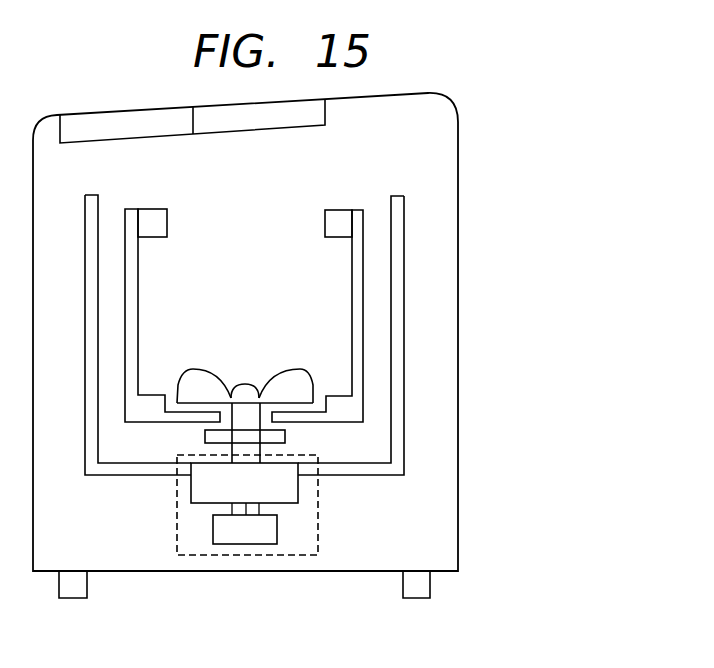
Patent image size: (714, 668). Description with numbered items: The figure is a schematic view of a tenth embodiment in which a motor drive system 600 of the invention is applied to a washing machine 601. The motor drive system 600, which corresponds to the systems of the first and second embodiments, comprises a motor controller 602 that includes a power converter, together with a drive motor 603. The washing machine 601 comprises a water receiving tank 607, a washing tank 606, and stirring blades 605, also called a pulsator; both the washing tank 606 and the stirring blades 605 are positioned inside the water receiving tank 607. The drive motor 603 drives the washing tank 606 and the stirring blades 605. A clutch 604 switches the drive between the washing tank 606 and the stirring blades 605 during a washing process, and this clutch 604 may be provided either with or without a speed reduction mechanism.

The motor drive system 600 is at (177, 529).
The washing machine 601 is at (459, 172).
The motor controller 602 is at (248, 544).
The drive motor 603 is at (190, 485).
The clutch 604 is at (285, 437).
The stirring blades 605 is at (283, 370).
The washing tank 606 is at (357, 209).
The water receiving tank 607 is at (398, 196).